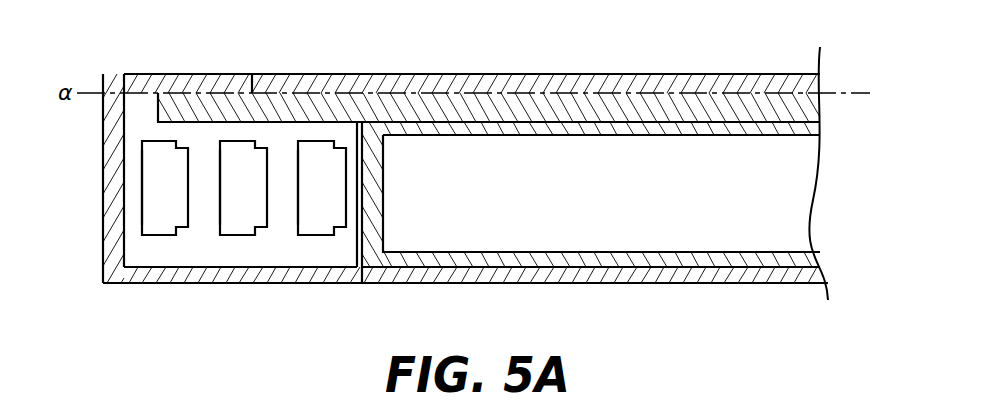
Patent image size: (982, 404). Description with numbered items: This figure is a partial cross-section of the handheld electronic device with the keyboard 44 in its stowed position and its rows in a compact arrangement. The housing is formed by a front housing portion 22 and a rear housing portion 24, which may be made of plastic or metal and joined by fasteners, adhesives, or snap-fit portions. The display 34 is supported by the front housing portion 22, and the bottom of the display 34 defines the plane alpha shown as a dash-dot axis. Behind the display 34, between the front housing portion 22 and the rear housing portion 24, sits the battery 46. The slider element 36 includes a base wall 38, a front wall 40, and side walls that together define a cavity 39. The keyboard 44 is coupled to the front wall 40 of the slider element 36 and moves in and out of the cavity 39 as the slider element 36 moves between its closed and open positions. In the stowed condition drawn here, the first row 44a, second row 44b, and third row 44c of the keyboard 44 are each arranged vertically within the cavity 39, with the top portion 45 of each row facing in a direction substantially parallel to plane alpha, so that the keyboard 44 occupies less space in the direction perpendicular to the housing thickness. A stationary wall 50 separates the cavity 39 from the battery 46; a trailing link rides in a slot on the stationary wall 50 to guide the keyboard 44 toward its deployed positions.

The front housing portion 22 is at (652, 107).
The rear housing portion 24 is at (628, 277).
The display 34 is at (543, 85).
The slider element 36 is at (88, 193).
The base wall 38 is at (277, 273).
The cavity 39 is at (289, 261).
The front wall 40 is at (112, 232).
The keyboard 44 is at (143, 248).
The first row 44a is at (165, 236).
The second row 44b is at (240, 236).
The third row 44c is at (317, 236).
The top portion 45 is at (142, 172).
The battery 46 is at (549, 214).
The stationary wall 50 is at (357, 258).